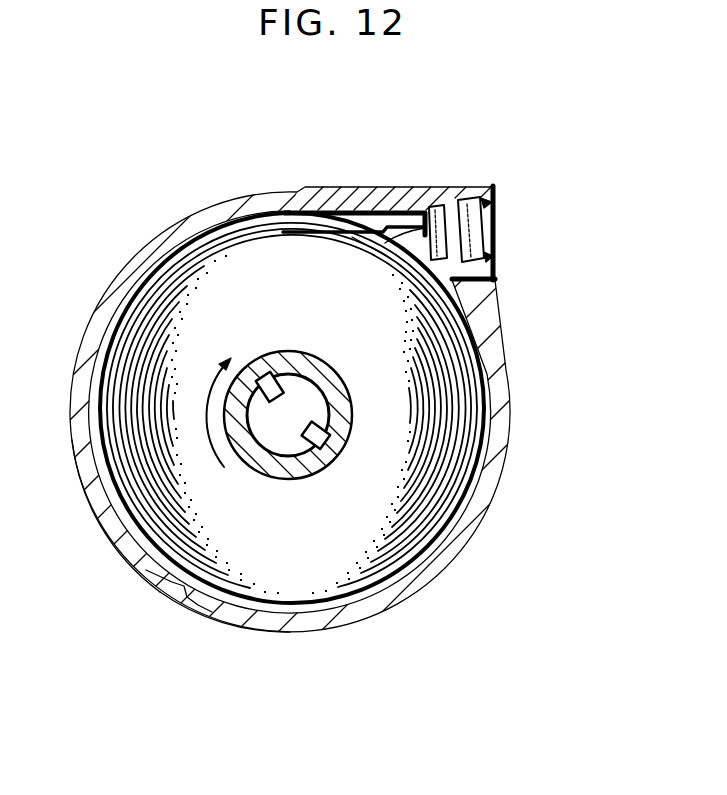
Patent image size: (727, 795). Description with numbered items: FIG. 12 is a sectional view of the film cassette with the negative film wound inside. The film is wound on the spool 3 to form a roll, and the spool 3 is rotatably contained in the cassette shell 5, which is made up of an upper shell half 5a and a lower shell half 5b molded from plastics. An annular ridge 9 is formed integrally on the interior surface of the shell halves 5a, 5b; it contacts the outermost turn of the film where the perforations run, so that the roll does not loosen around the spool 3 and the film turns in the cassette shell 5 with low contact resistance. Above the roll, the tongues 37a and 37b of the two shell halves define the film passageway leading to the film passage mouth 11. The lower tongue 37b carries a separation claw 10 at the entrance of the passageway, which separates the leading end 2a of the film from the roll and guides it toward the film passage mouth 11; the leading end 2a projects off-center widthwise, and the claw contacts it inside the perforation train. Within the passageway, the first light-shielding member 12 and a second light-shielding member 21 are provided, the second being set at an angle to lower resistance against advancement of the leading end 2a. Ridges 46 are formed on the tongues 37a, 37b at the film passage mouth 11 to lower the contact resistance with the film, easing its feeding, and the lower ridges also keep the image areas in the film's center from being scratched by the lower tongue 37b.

The leading end 2a is at (352, 237).
The spool 3 is at (291, 479).
The cassette shell 5 is at (52, 643).
The upper shell half 5a is at (150, 573).
The lower shell half 5b is at (223, 618).
The annular ridge 9 is at (222, 233).
The separation claw 10 is at (392, 258).
The film passage mouth 11 is at (493, 230).
The first light-shielding member 12 is at (415, 208).
The second light-shielding member 21 is at (453, 195).
The upper tongue 37a is at (417, 193).
The lower tongue 37b is at (488, 280).
The ridge 46 is at (500, 222).